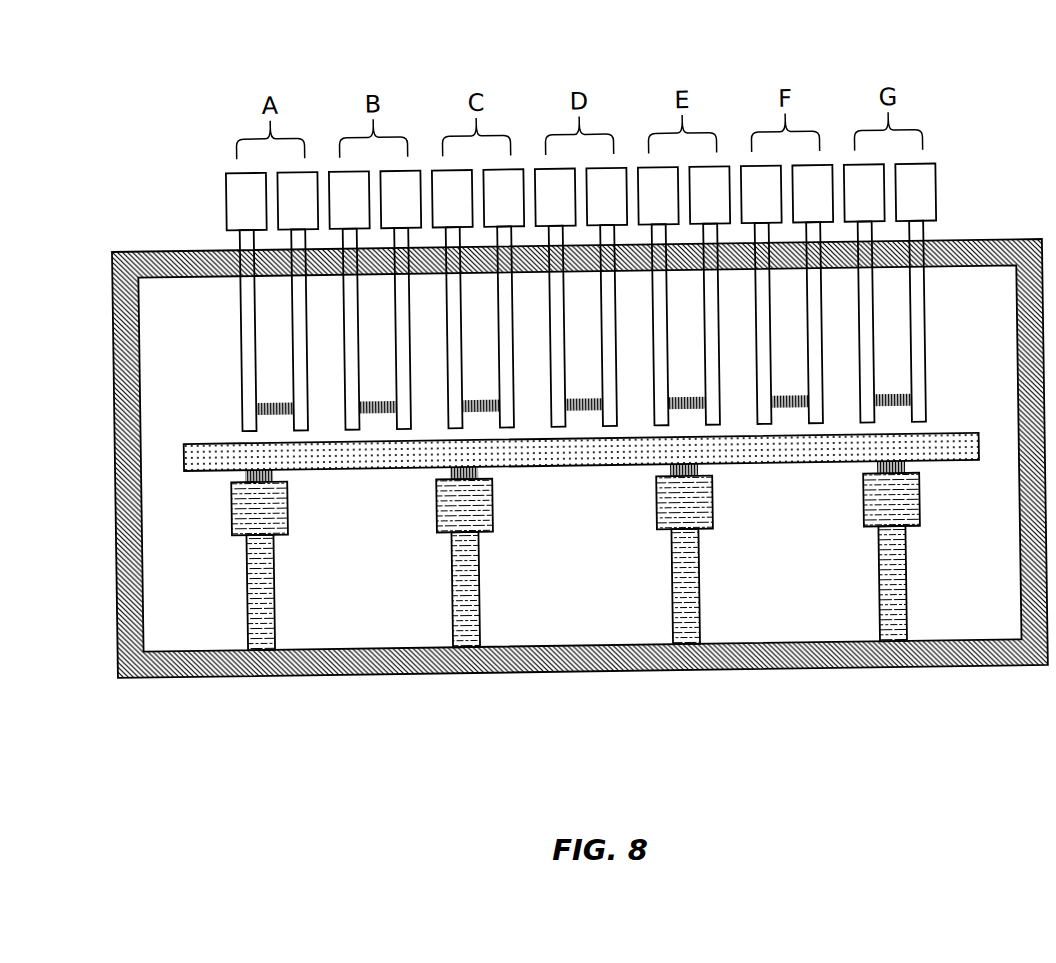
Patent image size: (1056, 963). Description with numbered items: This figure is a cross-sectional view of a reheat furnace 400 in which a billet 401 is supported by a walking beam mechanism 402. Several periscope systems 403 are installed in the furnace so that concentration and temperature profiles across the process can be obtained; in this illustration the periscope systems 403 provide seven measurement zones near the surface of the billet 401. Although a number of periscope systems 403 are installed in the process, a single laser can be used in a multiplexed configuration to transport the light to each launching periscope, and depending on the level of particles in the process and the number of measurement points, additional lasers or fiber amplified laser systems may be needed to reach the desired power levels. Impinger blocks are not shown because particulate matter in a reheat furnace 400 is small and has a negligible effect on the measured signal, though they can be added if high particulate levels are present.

The reheat furnace 400 is at (163, 252).
The billet 401 is at (180, 446).
The walking beam mechanism 402 is at (877, 562).
The periscope systems 403 is at (947, 162).